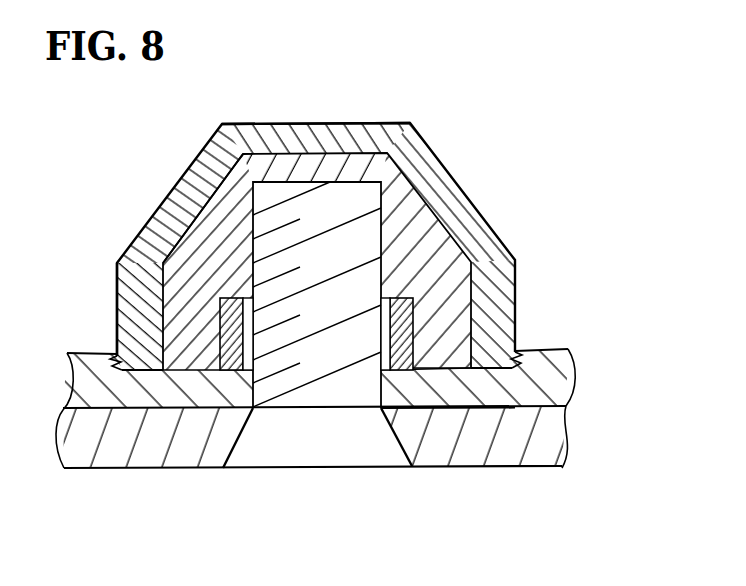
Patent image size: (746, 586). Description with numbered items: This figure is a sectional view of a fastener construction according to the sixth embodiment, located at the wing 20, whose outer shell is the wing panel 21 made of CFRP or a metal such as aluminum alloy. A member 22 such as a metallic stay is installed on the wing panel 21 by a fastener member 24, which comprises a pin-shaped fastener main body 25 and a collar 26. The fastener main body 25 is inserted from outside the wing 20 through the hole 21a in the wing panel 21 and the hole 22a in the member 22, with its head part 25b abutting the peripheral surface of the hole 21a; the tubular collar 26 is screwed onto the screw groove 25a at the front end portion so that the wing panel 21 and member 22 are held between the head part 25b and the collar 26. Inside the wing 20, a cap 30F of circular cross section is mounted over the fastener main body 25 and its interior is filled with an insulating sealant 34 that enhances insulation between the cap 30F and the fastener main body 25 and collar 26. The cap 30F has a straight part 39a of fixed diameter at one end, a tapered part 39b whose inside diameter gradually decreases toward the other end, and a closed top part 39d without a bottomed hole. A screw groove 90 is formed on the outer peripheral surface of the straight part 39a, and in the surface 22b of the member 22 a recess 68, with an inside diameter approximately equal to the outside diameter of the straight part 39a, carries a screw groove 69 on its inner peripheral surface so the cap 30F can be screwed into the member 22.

The wing 20 is at (633, 354).
The wing panel 21 is at (574, 440).
The hole 21a is at (403, 456).
The member 22 is at (560, 387).
The hole 22a is at (385, 399).
The surface 22b is at (553, 349).
The fastener member 24 is at (502, 202).
The fastener main body 25 is at (215, 201).
The screw groove 25a is at (243, 183).
The head part 25b is at (227, 458).
The collar 26 is at (220, 322).
The cap 30F is at (418, 136).
The sealant 34 is at (186, 239).
The straight part 39a is at (117, 323).
The tapered part 39b is at (117, 295).
The top part 39d is at (300, 123).
The recess 68 is at (443, 368).
The screw groove 69 is at (513, 362).
The screw groove 90 is at (100, 354).